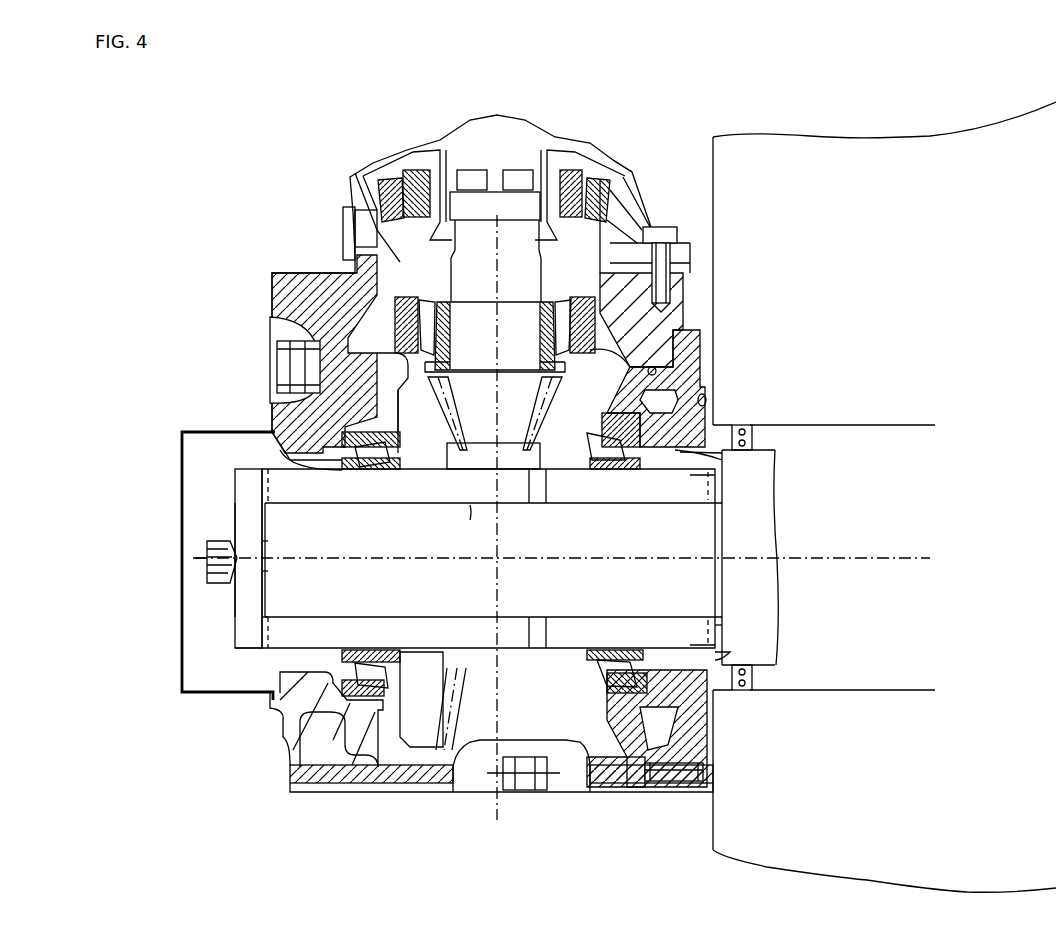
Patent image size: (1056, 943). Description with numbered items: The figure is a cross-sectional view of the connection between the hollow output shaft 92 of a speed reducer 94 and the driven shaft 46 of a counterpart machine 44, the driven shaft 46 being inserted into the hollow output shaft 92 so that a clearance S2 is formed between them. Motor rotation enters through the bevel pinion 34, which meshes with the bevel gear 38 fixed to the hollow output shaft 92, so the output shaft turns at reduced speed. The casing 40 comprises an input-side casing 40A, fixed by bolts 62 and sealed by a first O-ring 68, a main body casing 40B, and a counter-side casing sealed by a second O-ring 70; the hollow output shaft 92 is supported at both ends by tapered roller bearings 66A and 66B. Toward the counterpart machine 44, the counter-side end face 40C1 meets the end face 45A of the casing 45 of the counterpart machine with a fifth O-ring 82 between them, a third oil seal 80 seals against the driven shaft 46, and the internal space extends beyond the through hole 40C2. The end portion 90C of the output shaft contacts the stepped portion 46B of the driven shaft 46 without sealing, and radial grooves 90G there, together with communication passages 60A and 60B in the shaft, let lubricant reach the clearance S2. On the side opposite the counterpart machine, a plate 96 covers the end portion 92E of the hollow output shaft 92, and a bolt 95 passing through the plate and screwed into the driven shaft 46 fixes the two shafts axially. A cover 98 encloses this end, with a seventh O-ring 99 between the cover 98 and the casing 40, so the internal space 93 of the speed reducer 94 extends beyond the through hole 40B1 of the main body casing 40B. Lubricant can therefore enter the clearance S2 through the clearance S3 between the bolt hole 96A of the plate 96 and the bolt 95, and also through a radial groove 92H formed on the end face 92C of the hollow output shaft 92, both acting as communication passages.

The bevel pinion 34 is at (558, 388).
The bevel gear 38 is at (460, 705).
The casing 40 is at (265, 305).
The input-side casing 40A is at (628, 175).
The main body casing 40B is at (289, 287).
The through hole of main body casing 40B1 is at (283, 457).
The counter-side end face of counter-side casing 40C1 is at (717, 405).
The through hole of counter-side casing 40C2 is at (700, 455).
The counterpart machine 44 is at (872, 146).
The casing of counterpart machine 45 is at (766, 419).
The end face of casing of counterpart machine 45A is at (722, 453).
The driven shaft 46 is at (697, 541).
The stepped portion of driven shaft 46B is at (730, 653).
The communication passage 60A is at (528, 490).
The communication passage 60B is at (531, 627).
The bolt 62 is at (670, 227).
The tapered roller bearing 66A is at (385, 463).
The tapered roller bearing 66B is at (607, 453).
The first O-ring 68 is at (632, 225).
The second O-ring 70 is at (660, 357).
The third oil seal 80 is at (742, 423).
The fifth O-ring 82 is at (718, 400).
The end portion of hollow output shaft 90C is at (725, 628).
The grooves 90G is at (716, 613).
The hollow output shaft 92 is at (590, 490).
The end face of hollow output shaft 92C is at (262, 486).
The end portion of hollow output shaft 92E is at (248, 666).
The groove 92H is at (268, 618).
The internal space 93 is at (231, 465).
The speed reducer 94 is at (293, 202).
The bolt 95 is at (228, 545).
The plate 96 is at (248, 613).
The bolt hole of plate 96A is at (268, 570).
The cover 98 is at (182, 457).
The seventh O-ring 99 is at (283, 728).
The clearance S2 is at (471, 525).
The clearance S3 is at (268, 546).